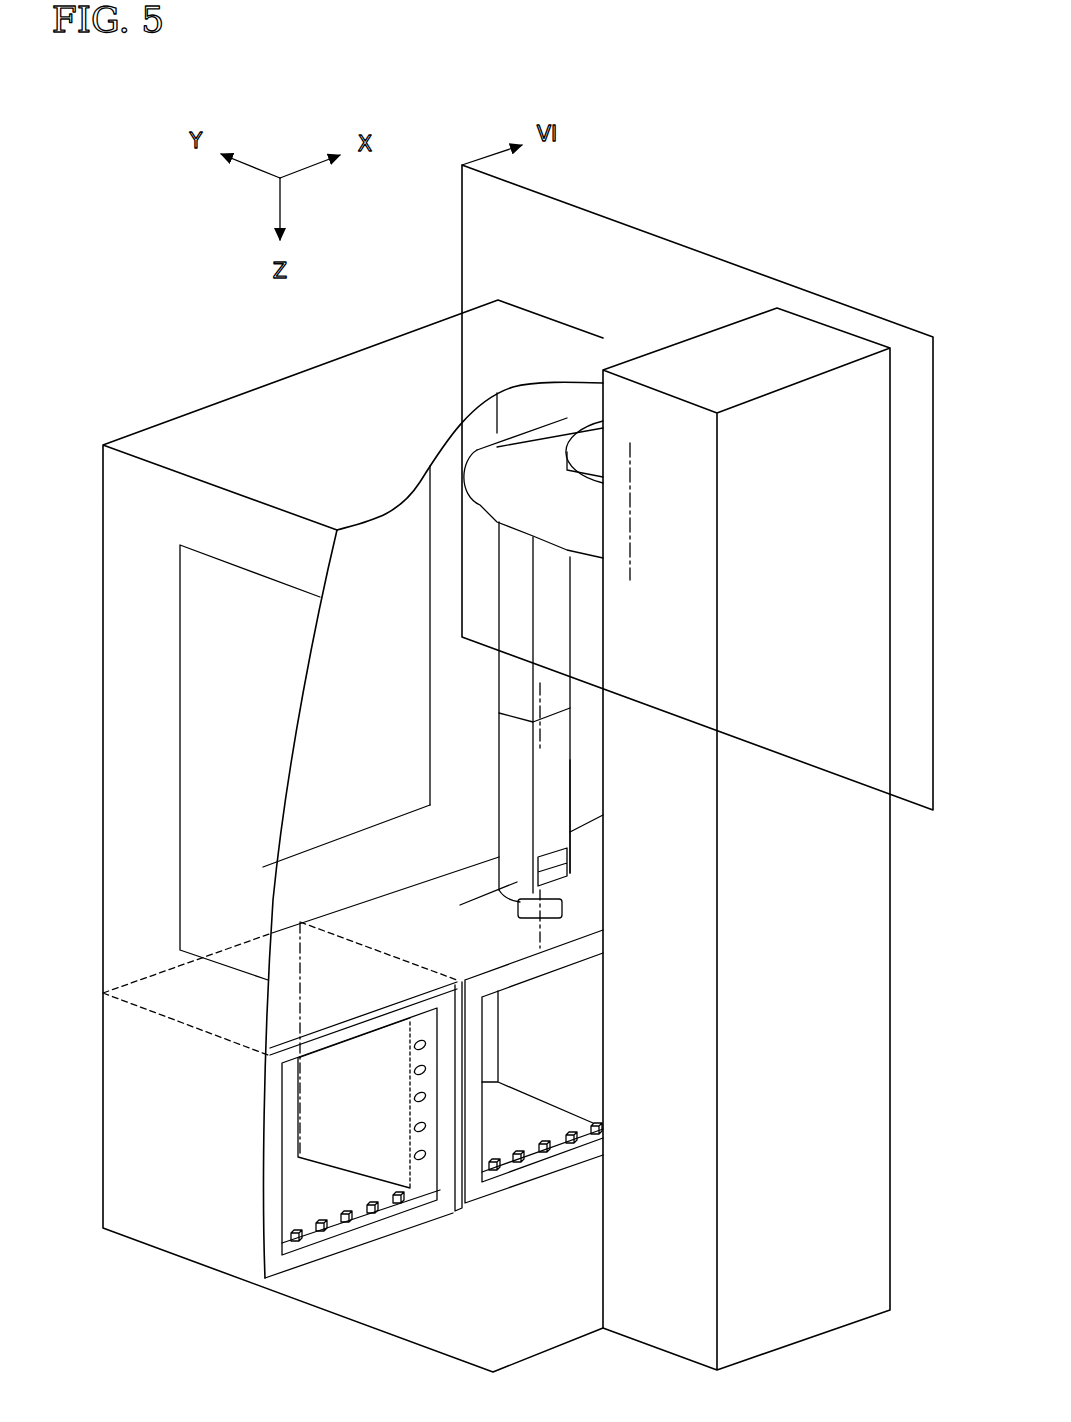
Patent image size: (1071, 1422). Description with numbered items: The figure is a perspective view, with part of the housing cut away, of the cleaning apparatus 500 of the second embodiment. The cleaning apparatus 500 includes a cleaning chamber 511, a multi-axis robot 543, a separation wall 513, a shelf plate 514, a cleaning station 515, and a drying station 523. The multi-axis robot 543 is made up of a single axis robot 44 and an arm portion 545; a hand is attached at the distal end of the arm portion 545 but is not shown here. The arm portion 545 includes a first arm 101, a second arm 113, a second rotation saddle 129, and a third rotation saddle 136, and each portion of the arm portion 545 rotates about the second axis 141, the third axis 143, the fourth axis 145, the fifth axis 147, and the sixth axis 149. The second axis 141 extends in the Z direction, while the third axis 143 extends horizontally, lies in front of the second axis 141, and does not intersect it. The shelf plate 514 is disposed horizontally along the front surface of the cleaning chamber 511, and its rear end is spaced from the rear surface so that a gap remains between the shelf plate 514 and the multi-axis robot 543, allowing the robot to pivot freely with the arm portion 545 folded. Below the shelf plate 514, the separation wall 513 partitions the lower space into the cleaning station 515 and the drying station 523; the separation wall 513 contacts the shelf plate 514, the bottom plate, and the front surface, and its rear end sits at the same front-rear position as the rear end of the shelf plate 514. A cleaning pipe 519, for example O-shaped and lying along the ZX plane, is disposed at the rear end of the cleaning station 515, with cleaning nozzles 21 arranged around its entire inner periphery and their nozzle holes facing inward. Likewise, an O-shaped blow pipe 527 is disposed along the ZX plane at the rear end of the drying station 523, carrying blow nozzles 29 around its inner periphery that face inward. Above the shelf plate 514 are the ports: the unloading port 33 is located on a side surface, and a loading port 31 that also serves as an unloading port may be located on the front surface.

The cleaning apparatus 500 is at (885, 137).
The cleaning chamber 511 is at (223, 400).
The unloading port 33 is at (237, 568).
The multi-axis robot 543 is at (703, 305).
The single axis robot 44 is at (823, 320).
The loading port 31 is at (428, 669).
The shelf plate 514 is at (362, 905).
The arm portion 545 is at (475, 748).
The second axis 141 is at (630, 487).
The third axis 143 is at (503, 485).
The first arm 101 is at (573, 650).
The fourth axis 145 is at (540, 700).
The second arm 113 is at (570, 810).
The second rotation saddle 129 is at (560, 868).
The third rotation saddle 136 is at (562, 905).
The fifth axis 147 is at (488, 893).
The sixth axis 149 is at (537, 933).
The cleaning station 515 is at (465, 1124).
The blow pipe 527 is at (345, 1018).
The drying station 523 is at (364, 1170).
The blow nozzles 29 is at (418, 1098).
The separation wall 513 is at (463, 1178).
The cleaning pipe 519 is at (543, 1177).
The cleaning nozzles 21 is at (567, 1130).